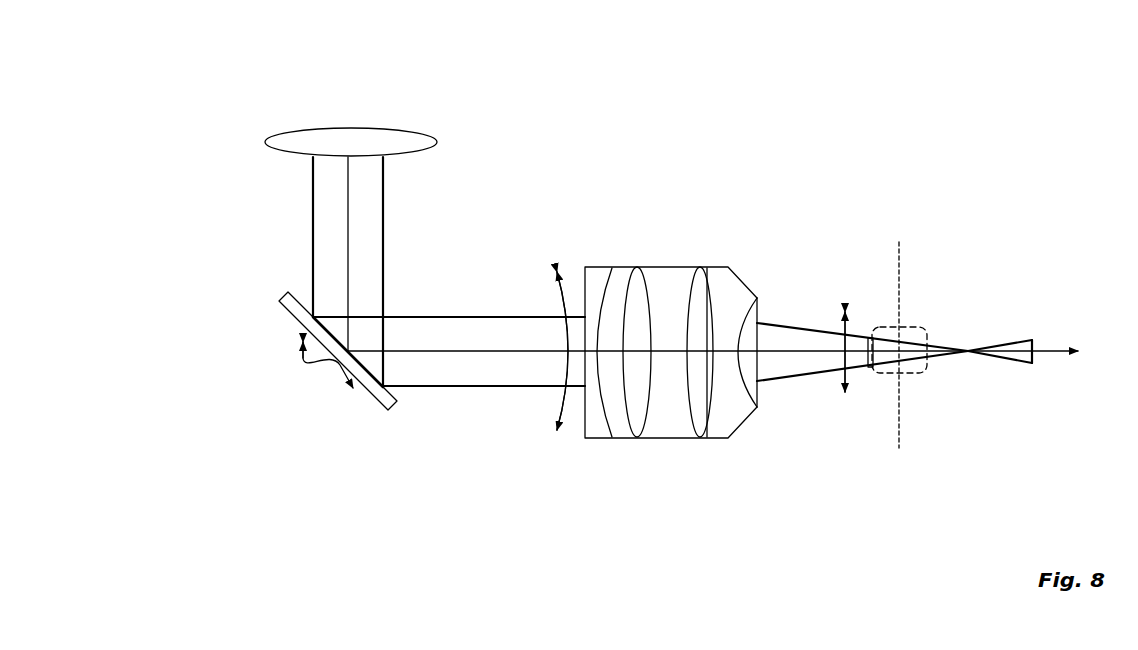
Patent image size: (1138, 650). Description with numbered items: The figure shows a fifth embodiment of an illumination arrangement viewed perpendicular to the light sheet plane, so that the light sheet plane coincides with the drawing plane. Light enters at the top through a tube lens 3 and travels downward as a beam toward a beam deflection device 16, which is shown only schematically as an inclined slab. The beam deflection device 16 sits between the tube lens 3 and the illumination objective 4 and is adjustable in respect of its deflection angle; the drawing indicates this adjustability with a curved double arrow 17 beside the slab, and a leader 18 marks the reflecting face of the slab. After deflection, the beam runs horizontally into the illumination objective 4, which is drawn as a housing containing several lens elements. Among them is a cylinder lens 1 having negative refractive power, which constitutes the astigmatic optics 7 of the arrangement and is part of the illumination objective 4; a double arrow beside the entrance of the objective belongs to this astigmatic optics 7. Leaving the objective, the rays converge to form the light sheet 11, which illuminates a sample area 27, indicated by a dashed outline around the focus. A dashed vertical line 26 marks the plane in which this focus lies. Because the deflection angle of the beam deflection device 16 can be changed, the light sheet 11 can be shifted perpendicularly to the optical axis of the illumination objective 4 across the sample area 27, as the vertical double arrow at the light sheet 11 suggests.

The cylinder lens 1 is at (598, 430).
The tube lens 3 is at (290, 145).
The illumination objective 4 is at (652, 217).
The astigmatic optics 7 is at (593, 488).
The light sheet 11 is at (870, 383).
The beam deflection device 16 is at (363, 432).
The mirror tilt direction 17 is at (303, 357).
The reflecting surface 18 is at (292, 310).
The focal plane 26 is at (900, 270).
The sample area 27 is at (913, 365).